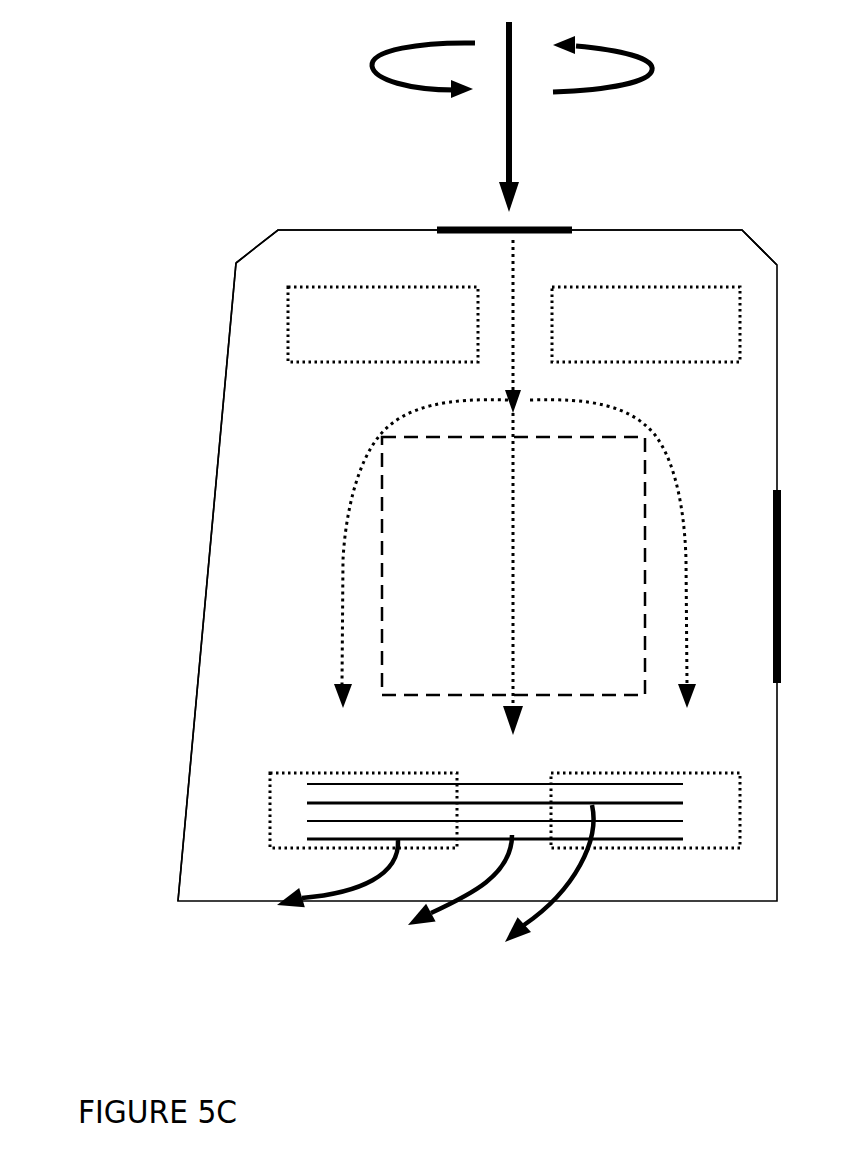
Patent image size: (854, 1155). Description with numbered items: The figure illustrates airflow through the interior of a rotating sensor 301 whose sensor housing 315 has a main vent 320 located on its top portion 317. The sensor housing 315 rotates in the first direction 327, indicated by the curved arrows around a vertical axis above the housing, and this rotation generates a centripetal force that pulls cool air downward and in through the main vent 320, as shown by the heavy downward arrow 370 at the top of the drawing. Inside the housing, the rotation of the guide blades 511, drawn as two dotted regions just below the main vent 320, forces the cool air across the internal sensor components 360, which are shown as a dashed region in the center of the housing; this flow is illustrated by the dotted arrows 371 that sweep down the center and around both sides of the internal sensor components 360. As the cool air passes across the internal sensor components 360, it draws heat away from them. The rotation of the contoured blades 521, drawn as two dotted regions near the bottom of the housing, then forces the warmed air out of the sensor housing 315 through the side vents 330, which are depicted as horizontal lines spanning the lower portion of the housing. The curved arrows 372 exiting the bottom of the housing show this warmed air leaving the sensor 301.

The sensor 301 is at (187, 248).
The sensor housing 315 is at (227, 363).
The top portion 317 is at (278, 230).
The main vent 320 is at (437, 230).
The first direction 327 is at (652, 67).
The side vents 330 is at (307, 802).
The internal sensor components 360 is at (425, 478).
The arrow 370 is at (507, 133).
The arrows 371 is at (345, 542).
The outlet flow 372 is at (505, 940).
The guide blades 511 is at (373, 287).
The contoured blades 521 is at (400, 773).